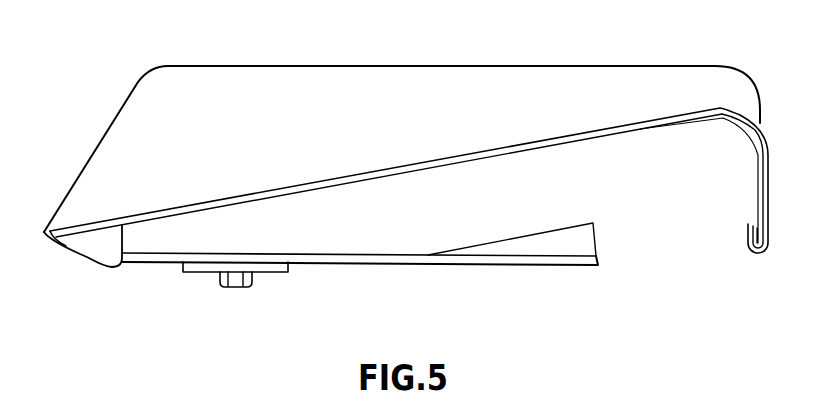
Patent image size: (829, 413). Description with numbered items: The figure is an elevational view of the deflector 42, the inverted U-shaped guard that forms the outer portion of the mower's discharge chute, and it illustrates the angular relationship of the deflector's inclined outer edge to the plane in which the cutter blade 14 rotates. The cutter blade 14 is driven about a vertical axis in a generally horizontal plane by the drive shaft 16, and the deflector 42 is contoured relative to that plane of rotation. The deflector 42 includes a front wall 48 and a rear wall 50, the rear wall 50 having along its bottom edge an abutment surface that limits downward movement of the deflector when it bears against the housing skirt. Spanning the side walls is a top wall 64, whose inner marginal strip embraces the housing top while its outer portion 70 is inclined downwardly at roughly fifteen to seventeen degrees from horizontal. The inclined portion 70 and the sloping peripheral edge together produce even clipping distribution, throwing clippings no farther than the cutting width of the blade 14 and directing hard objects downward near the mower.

The cutter blade 14 is at (373, 263).
The drive shaft 16 is at (237, 288).
The deflector 42 is at (613, 62).
The front wall 48 is at (527, 148).
The rear wall 50 is at (112, 245).
The top wall 64 is at (453, 66).
The inclined top wall portion 70 is at (368, 82).